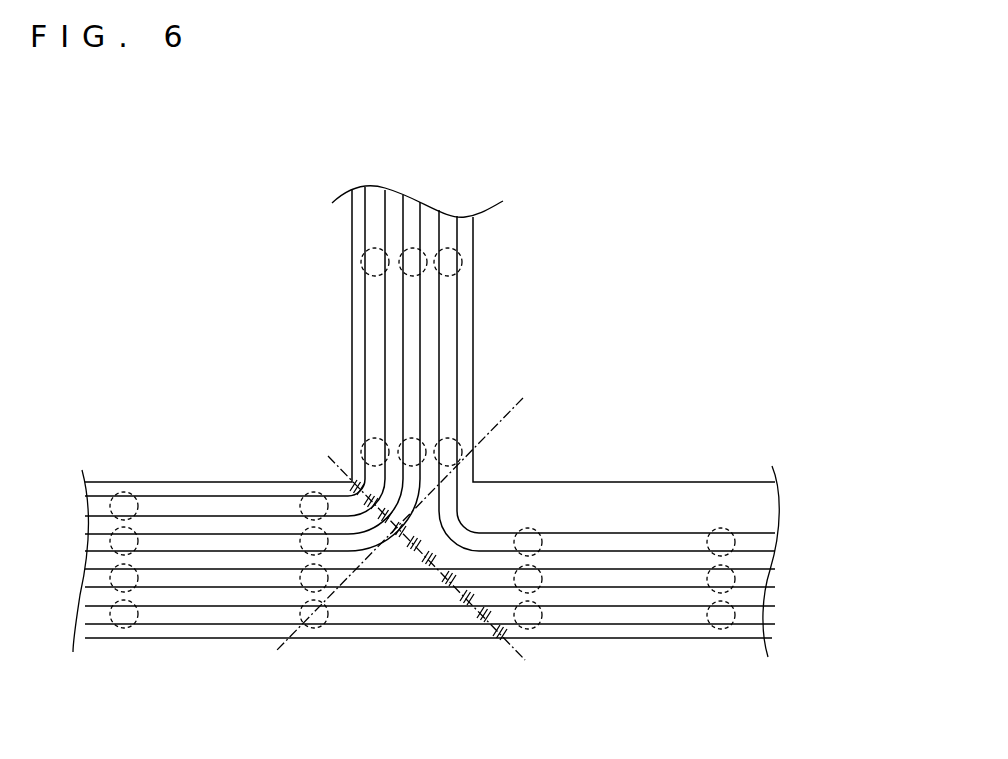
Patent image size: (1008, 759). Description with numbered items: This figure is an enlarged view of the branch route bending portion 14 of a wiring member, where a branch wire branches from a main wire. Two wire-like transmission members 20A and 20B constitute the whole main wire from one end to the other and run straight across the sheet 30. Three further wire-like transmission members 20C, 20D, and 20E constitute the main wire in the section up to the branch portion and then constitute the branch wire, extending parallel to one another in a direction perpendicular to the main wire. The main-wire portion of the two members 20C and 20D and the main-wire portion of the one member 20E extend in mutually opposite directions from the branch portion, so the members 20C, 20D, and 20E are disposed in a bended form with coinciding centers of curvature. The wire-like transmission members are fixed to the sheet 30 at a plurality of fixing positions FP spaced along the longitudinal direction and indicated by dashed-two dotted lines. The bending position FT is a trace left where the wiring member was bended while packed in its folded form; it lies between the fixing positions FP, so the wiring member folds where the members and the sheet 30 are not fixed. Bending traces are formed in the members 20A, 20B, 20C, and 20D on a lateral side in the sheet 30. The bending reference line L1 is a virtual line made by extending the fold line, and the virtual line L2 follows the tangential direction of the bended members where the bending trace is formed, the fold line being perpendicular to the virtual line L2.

The branch route bending portion 14 is at (342, 462).
The wire-like transmission member 20A is at (197, 618).
The wire-like transmission member 20B is at (255, 580).
The wire-like transmission member 20C is at (176, 543).
The wire-like transmission member 20D is at (238, 506).
The wire-like transmission member 20E is at (627, 542).
The sheet 30 is at (713, 498).
The fixing position FP is at (302, 544).
The bending position FT is at (370, 535).
The bending reference line L1 is at (512, 657).
The virtual line L2 is at (517, 402).